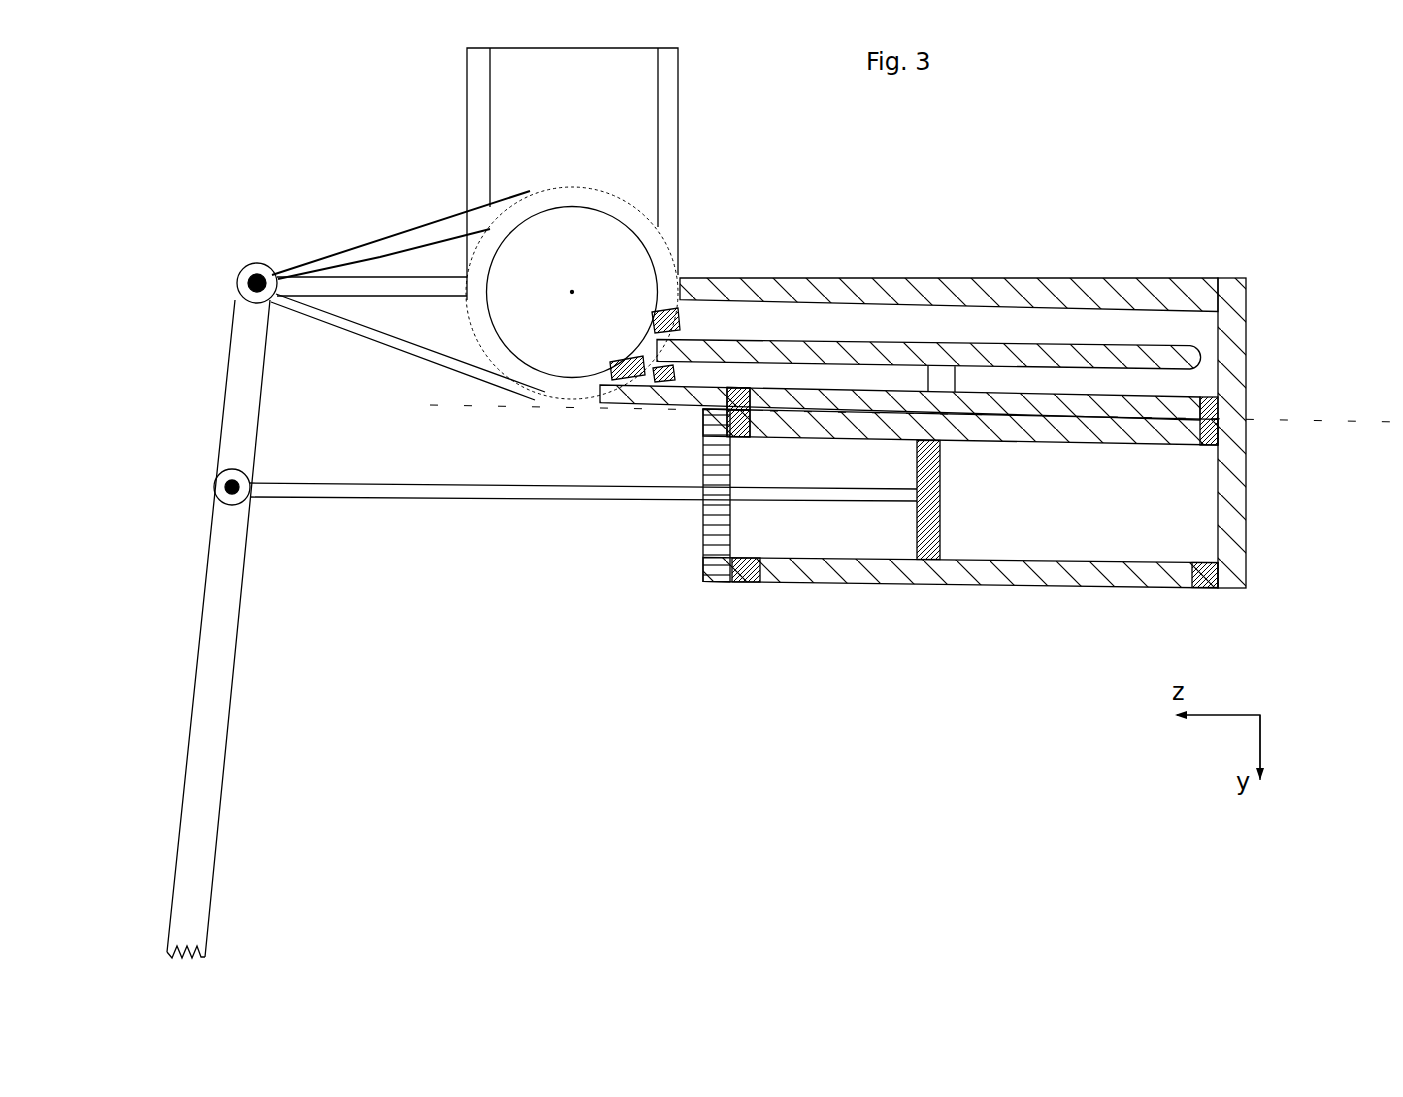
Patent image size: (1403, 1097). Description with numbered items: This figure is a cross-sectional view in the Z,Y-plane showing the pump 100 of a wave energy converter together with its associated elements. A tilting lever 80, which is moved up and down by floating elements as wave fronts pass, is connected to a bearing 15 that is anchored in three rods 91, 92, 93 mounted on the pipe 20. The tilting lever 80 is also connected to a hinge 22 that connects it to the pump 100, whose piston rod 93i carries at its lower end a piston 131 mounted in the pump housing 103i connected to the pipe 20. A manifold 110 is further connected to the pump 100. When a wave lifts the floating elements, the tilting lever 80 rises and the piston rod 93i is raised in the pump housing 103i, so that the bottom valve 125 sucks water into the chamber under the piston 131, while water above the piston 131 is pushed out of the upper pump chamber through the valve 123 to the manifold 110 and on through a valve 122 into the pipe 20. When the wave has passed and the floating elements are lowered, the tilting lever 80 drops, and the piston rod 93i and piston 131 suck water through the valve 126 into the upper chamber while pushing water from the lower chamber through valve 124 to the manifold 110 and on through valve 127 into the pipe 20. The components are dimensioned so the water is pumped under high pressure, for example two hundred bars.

The bearing 15 is at (215, 283).
The pipe 20 is at (462, 118).
The hinge 22 is at (212, 492).
The tilting lever 80 is at (187, 629).
The rod 91 is at (372, 334).
The rod 92 is at (405, 355).
The rod 93 is at (347, 232).
The piston rod 93i is at (432, 505).
The pump 100 is at (1008, 623).
The pump housing 103i is at (1246, 530).
The manifold 110 is at (1265, 345).
The valve 122 is at (772, 333).
The valve 123 is at (795, 319).
The valve 124 is at (929, 292).
The bottom valve 125 is at (1215, 595).
The valve 126 is at (750, 595).
The valve 127 is at (737, 335).
The piston 131 is at (965, 520).